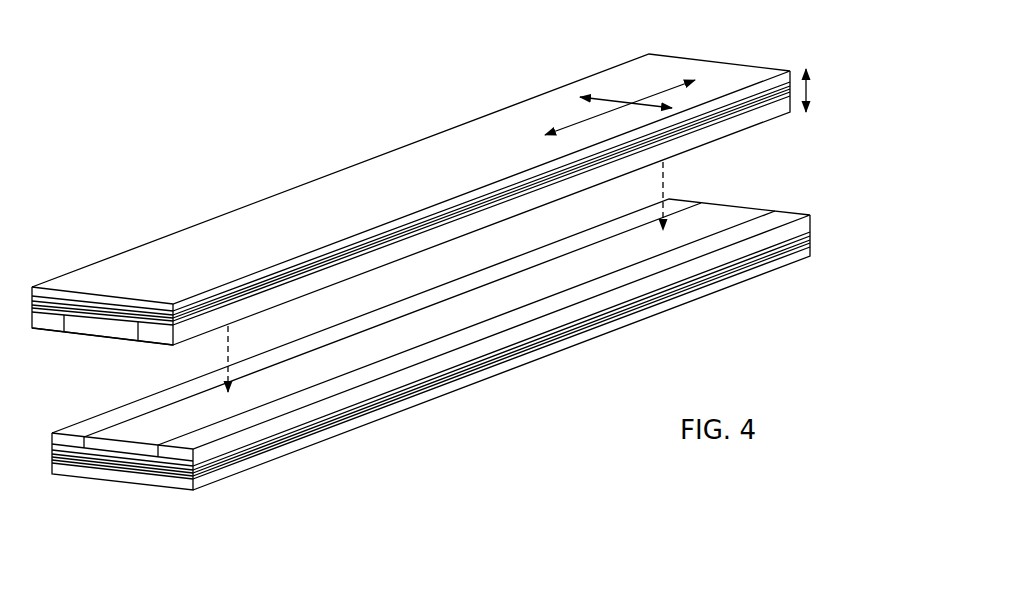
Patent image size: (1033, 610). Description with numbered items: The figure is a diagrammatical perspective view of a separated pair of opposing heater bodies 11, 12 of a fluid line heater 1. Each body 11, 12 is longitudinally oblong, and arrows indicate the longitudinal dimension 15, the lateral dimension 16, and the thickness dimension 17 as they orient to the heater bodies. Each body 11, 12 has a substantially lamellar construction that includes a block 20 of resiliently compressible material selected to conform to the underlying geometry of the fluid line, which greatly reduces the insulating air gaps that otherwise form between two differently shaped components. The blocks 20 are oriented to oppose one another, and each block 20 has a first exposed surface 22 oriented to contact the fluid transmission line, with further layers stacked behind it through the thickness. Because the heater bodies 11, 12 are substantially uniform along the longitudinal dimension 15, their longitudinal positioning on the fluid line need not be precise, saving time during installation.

The strain gauge assembly 1 is at (98, 150).
The heater body 11 is at (83, 268).
The heater body 12 is at (173, 489).
The longitudinal dimension 15 is at (590, 119).
The lateral dimension 16 is at (617, 102).
The thickness dimension 17 is at (810, 90).
The block 20 is at (86, 329).
The first exposed surface 22 is at (103, 337).